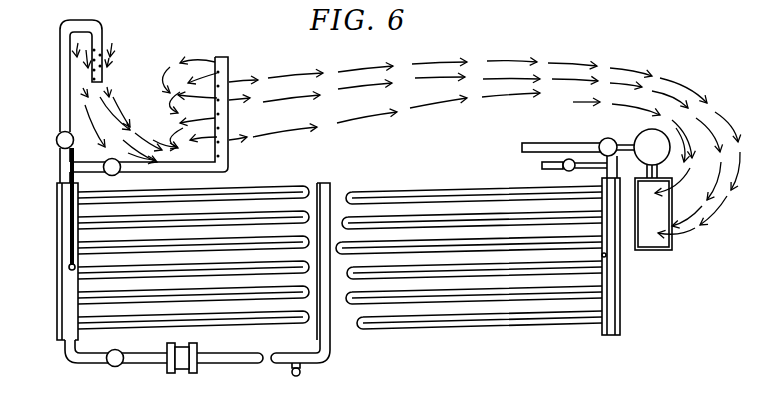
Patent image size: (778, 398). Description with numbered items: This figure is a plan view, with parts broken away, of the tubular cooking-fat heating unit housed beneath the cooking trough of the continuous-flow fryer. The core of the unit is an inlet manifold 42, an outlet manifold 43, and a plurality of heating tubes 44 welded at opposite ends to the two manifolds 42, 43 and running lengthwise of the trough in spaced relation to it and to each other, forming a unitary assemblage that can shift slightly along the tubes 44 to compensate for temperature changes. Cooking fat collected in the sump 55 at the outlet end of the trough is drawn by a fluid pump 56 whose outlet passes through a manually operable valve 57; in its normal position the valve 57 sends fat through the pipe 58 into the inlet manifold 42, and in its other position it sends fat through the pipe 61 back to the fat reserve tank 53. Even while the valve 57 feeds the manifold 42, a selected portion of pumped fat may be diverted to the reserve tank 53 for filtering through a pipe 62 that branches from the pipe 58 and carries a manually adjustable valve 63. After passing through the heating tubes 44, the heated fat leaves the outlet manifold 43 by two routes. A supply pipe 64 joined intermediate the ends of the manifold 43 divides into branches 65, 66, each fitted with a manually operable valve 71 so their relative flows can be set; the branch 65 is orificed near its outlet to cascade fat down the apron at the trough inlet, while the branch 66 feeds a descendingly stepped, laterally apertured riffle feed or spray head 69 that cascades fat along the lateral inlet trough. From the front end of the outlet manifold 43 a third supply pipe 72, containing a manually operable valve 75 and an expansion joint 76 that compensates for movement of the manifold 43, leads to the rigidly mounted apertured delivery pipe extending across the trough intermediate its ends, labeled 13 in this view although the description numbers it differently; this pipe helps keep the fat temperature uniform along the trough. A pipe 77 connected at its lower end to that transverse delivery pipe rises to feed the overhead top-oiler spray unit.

The intermediate header pipe 13 is at (331, 347).
The inlet manifold 42 is at (620, 327).
The outlet manifold 43 is at (65, 298).
The heating tubes 44 is at (462, 324).
The fat reserve tank 53 is at (776, 397).
The sump 55 is at (668, 221).
The fluid pump 56 is at (658, 131).
The manually operable valve 57 is at (612, 137).
The pipe 58 is at (604, 172).
The pipe 61 is at (570, 112).
The pipe 62 is at (556, 162).
The manually adjustable valve 63 is at (562, 170).
The supply pipe 64 is at (60, 172).
The branch supply pipe 65 is at (226, 74).
The branch supply pipe 66 is at (62, 52).
The riffle feed or spray head 69 is at (100, 62).
The manually operable valves 71 is at (56, 137).
The third supply pipe 72 is at (237, 364).
The manually operable valve 75 is at (112, 367).
The expansion joint 76 is at (178, 374).
The pipe 77 is at (300, 374).